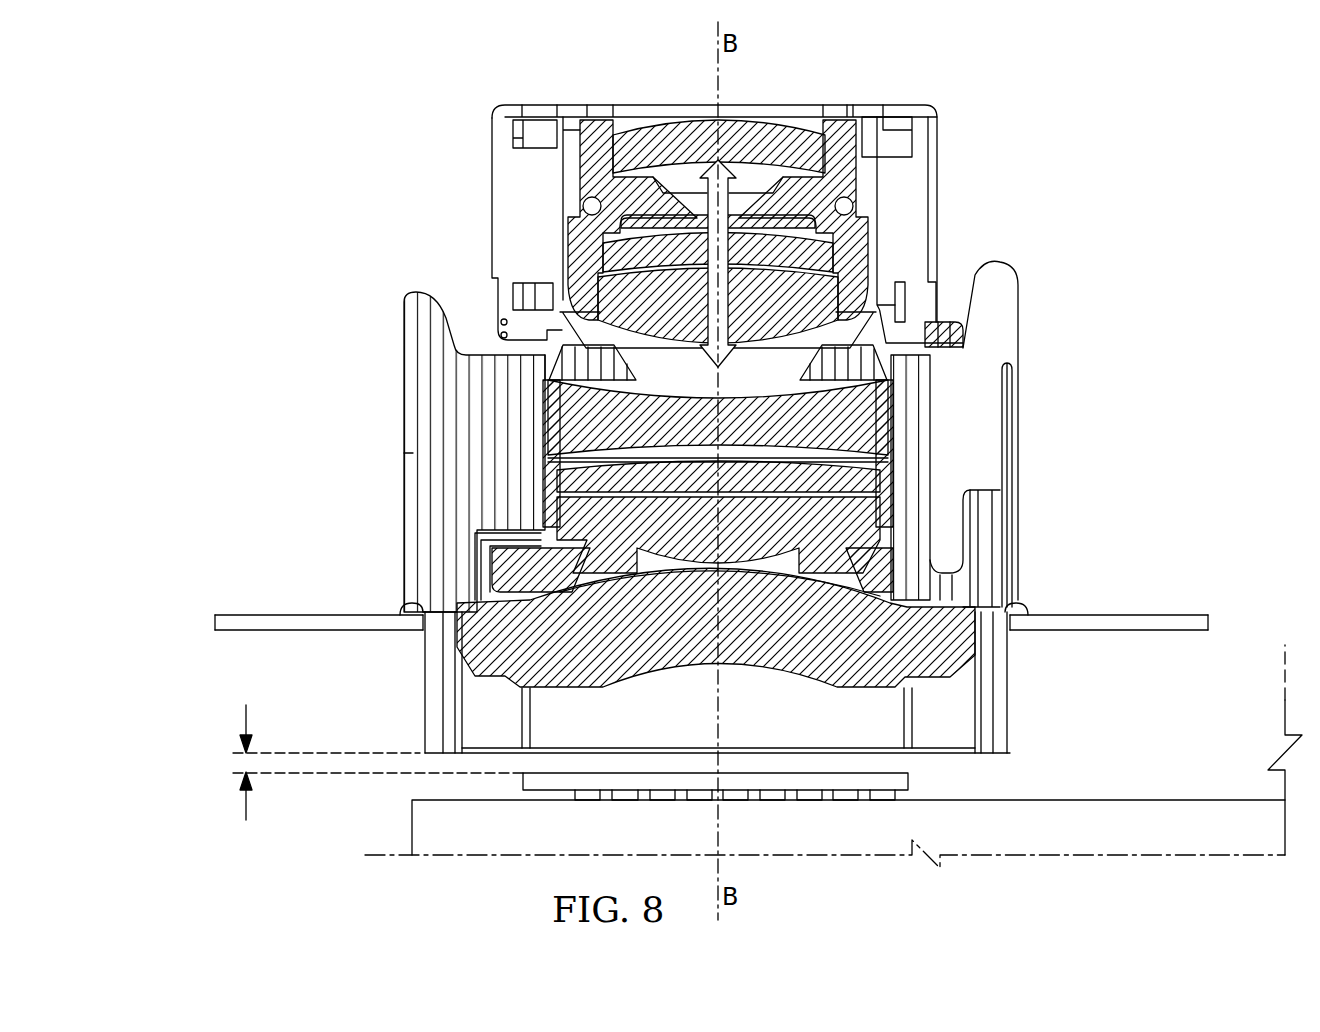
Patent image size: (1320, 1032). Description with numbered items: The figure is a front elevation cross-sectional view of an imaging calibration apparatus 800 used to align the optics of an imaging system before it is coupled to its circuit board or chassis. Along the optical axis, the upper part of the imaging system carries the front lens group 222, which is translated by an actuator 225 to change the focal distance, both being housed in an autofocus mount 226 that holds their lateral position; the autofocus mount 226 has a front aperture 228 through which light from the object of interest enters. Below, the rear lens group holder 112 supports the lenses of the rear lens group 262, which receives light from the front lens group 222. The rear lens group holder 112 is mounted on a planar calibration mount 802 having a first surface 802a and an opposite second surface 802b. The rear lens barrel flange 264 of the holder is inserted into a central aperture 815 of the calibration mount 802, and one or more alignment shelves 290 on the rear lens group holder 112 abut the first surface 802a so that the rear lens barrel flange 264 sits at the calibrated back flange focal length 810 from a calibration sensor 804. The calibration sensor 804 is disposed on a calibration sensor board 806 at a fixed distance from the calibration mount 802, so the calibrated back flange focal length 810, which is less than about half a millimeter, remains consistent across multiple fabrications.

The rear lens group holder 112 is at (415, 330).
The front lens group 222 is at (497, 330).
The actuator 225 is at (568, 240).
The autofocus mount 226 is at (520, 107).
The front aperture 228 is at (803, 108).
The rear lens group 262 is at (1018, 380).
The rear lens barrel flange 264 is at (425, 728).
The alignment shelves 290 is at (400, 615).
The imaging calibration apparatus 800 is at (1213, 570).
The calibration mount 802 is at (215, 622).
The first surface 802a is at (320, 613).
The second surface 802b is at (255, 635).
The calibration sensor 804 is at (910, 782).
The calibration sensor board 806 is at (1198, 800).
The calibrated back flange focal length 810 is at (246, 718).
The central aperture 815 is at (410, 652).